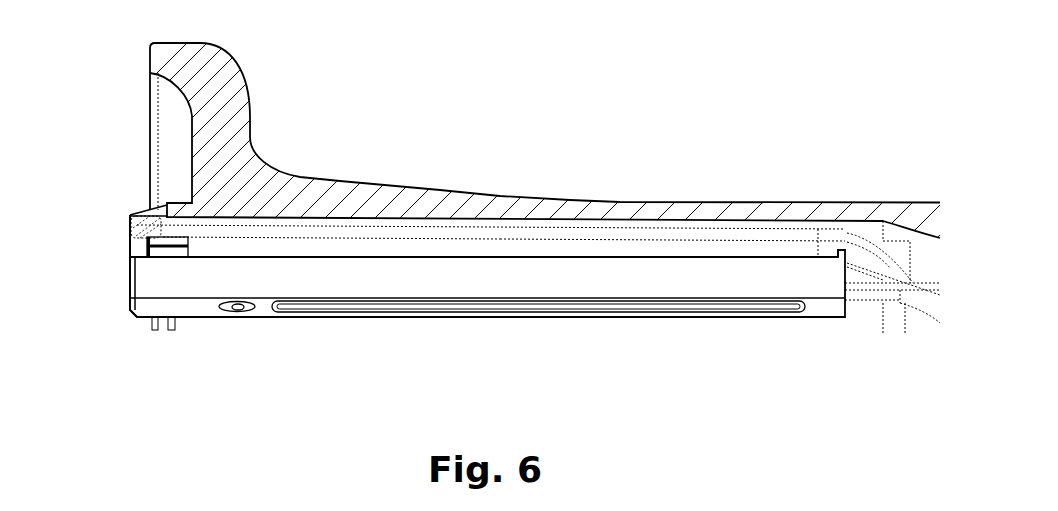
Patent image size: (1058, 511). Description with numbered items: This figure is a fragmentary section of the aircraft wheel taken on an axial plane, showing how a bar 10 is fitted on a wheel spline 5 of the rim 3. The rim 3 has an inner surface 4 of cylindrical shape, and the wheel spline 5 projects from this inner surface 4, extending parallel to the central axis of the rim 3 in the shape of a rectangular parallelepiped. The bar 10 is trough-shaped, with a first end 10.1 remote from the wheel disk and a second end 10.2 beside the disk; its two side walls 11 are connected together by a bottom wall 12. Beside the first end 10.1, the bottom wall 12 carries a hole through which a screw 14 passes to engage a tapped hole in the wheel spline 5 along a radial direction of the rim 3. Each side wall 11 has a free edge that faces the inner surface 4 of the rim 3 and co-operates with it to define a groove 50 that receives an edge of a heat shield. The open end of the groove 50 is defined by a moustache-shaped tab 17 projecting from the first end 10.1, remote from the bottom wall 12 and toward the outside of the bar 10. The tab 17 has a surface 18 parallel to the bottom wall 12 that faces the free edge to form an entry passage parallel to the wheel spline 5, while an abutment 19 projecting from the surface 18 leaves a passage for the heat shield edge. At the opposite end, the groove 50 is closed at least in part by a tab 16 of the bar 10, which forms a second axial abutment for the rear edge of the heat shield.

The rim 3 is at (226, 73).
The inner surface 4 is at (407, 222).
The wheel spline 5 is at (329, 243).
The groove 50 is at (632, 247).
The tab 16 is at (845, 250).
The bar 10 is at (630, 323).
The first end 10.1 is at (143, 287).
The second end 10.2 is at (845, 295).
The moustache-shaped tab 17 is at (165, 230).
The abutment 19 is at (143, 243).
The surface 18 is at (143, 257).
The bottom wall 12 is at (188, 310).
The screw 14 is at (236, 312).
The side wall 11 is at (307, 286).